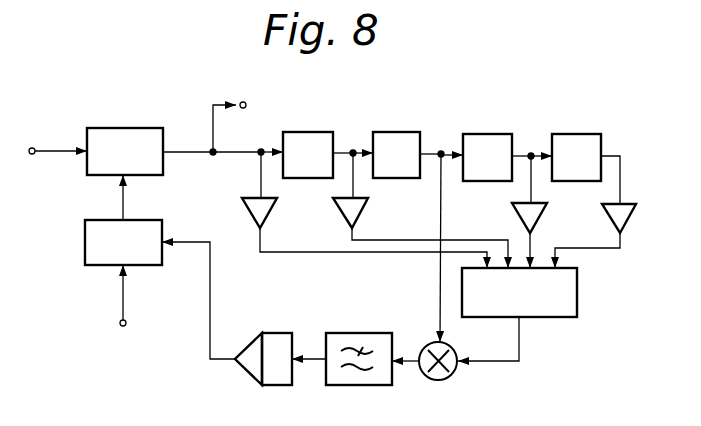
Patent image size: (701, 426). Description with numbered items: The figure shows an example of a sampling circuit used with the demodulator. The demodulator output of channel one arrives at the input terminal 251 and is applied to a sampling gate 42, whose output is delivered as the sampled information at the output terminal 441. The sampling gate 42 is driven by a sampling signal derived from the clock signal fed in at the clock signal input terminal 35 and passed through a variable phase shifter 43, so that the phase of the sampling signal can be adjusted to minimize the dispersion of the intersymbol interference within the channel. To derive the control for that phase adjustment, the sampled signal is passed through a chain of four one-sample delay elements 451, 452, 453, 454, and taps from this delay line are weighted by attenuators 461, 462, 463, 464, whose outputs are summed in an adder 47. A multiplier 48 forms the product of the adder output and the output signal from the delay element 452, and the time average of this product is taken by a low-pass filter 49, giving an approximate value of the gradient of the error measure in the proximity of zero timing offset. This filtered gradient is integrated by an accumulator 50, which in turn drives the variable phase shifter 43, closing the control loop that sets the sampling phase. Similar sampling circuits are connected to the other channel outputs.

The input terminal 251 is at (33, 147).
The sampling gate 42 is at (125, 128).
The variable phase shifter 43 is at (140, 220).
The output terminal 441 is at (245, 102).
The 1-sample delay element 451 is at (311, 132).
The 1-sample delay element 452 is at (399, 132).
The 1-sample delay element 453 is at (490, 134).
The 1-sample delay element 454 is at (579, 134).
The attenuator 461 is at (270, 206).
The attenuator 462 is at (361, 206).
The attenuator 463 is at (540, 211).
The attenuator 464 is at (626, 214).
The adder 47 is at (577, 293).
The multiplier 48 is at (448, 377).
The low-pass filter 49 is at (372, 385).
The accumulator 50 is at (280, 385).
The clock signal input terminal 35 is at (123, 326).